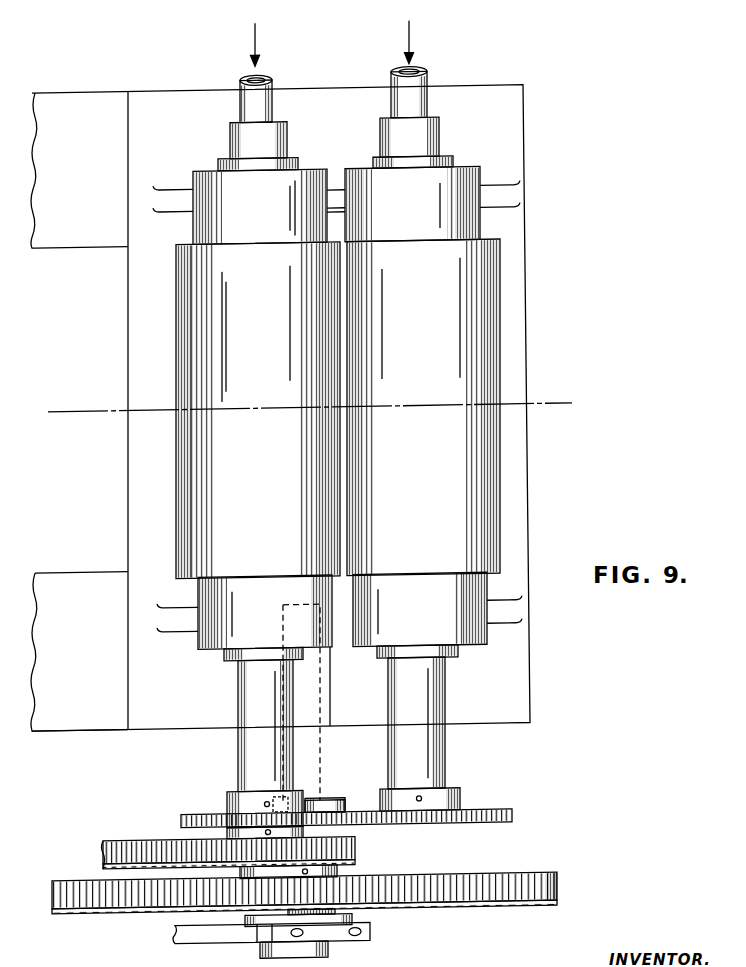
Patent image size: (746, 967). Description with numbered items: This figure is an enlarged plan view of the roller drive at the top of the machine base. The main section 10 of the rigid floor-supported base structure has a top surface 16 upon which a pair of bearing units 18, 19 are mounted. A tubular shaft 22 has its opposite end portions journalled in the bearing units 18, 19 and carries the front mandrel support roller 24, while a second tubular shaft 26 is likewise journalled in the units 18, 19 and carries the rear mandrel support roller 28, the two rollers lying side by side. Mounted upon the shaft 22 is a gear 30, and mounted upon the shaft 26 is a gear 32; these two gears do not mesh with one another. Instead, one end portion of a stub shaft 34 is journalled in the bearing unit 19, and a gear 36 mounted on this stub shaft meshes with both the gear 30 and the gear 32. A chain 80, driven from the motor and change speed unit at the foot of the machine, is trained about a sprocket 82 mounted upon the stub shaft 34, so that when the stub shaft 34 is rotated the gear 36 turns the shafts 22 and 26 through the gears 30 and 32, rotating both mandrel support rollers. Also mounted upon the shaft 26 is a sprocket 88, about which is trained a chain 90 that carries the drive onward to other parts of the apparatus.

The main section 10 is at (91, 96).
The top surface 16 is at (178, 97).
The bearing unit 18 is at (478, 179).
The bearing unit 19 is at (478, 645).
The tubular shaft 22 is at (426, 86).
The front mandrel support roller 24 is at (433, 490).
The second tubular shaft 26 is at (266, 92).
The rear mandrel support roller 28 is at (273, 491).
The gear 30 is at (513, 818).
The gear 32 is at (181, 815).
The stub shaft 34 is at (318, 742).
The gear 36 is at (343, 812).
The chain 80 is at (455, 900).
The sprocket 82 is at (558, 882).
The sprocket 88 is at (357, 851).
The chain 90 is at (113, 842).